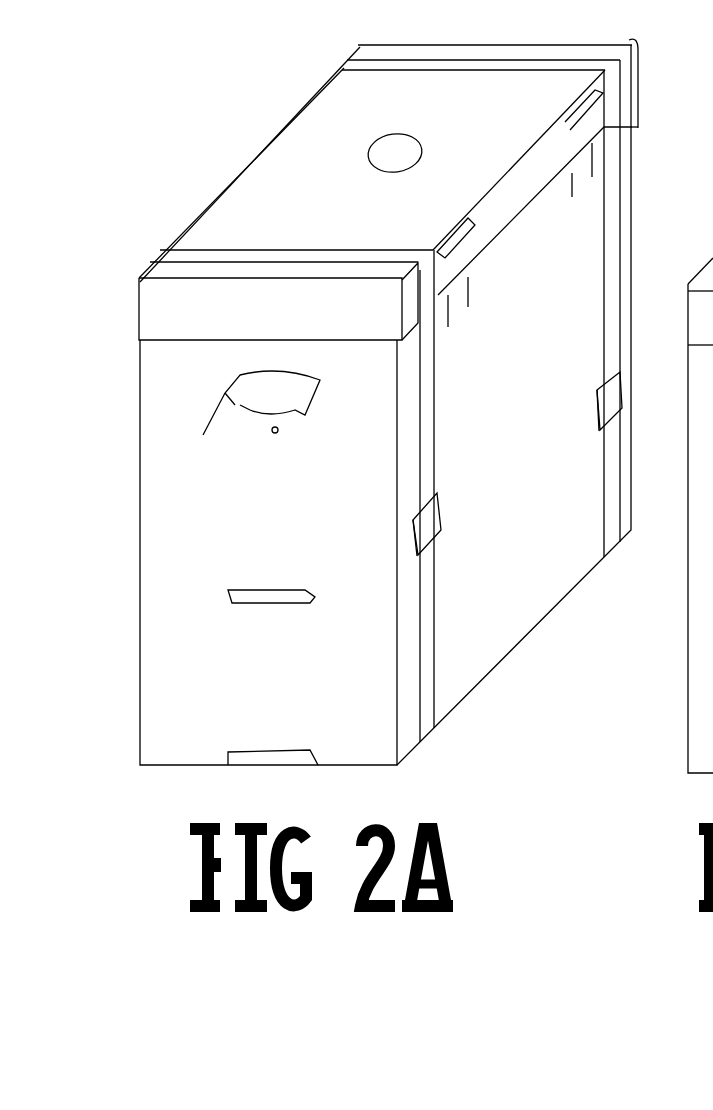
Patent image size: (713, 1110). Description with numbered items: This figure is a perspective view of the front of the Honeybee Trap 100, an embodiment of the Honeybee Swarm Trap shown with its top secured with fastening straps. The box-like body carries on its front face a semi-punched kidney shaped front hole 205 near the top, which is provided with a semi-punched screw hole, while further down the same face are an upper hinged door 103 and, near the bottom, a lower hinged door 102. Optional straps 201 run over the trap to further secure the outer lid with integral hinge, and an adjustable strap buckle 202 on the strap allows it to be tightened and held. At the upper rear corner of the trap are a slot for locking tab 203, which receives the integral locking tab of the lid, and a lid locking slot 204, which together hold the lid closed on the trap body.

The Honeybee Trap 100 is at (302, 41).
The lower hinged door 102 is at (227, 752).
The upper hinged door 103 is at (227, 590).
The straps 201 is at (440, 655).
The adjustable strap buckle 202 is at (443, 530).
The slot for locking tab 203 is at (629, 125).
The lid locking slot 204 is at (628, 75).
The semi-punched kidney shaped front hole 205 is at (203, 435).